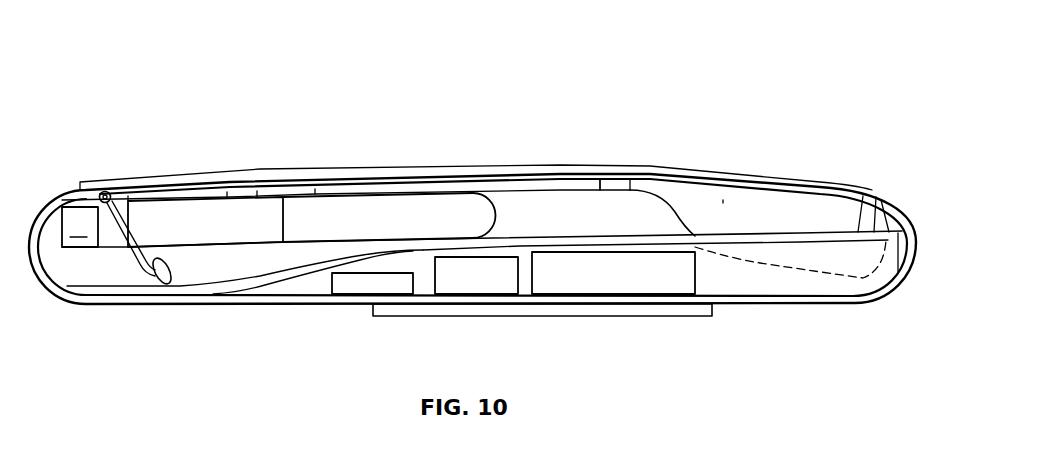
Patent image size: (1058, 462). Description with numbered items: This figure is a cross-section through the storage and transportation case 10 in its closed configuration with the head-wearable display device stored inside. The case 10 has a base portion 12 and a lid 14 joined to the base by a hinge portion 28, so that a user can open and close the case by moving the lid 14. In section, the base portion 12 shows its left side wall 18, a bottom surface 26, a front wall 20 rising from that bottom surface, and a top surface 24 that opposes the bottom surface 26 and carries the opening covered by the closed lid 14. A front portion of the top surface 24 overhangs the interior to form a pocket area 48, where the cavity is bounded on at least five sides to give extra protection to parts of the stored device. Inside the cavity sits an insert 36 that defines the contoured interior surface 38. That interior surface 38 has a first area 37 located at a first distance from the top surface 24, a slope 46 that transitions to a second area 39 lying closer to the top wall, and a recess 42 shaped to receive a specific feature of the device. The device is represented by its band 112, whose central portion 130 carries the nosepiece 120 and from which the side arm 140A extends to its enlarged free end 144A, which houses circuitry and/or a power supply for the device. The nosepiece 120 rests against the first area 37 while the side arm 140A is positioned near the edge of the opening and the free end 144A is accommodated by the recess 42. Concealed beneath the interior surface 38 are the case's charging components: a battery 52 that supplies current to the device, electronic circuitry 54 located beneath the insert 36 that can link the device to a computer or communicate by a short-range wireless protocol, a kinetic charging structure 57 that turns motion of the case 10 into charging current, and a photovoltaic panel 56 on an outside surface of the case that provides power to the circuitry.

The storage and transportation case 10 is at (197, 35).
The base portion 12 is at (192, 342).
The lid 14 is at (277, 213).
The left side wall 18 is at (537, 188).
The front wall 20 is at (39, 283).
The top surface 24 is at (57, 194).
The bottom surface 26 is at (288, 285).
The hinge portion 28 is at (907, 208).
The insert 36 is at (424, 262).
The first area 37 is at (180, 288).
The interior surface 38 is at (510, 188).
The second area 39 is at (621, 234).
The recess 42 is at (762, 263).
The slope 46 is at (302, 270).
The pocket area 48 is at (74, 273).
The battery 52 is at (584, 281).
The electronic circuitry 54 is at (368, 288).
The photovoltaic panel 56 is at (580, 312).
The kinetic charging structure 57 is at (484, 283).
The band 112 is at (180, 176).
The nosepiece 120 is at (150, 288).
The central portion 130 is at (105, 190).
The side arm 140A is at (467, 187).
The free end 144A is at (723, 203).